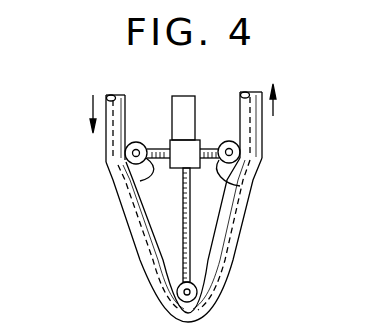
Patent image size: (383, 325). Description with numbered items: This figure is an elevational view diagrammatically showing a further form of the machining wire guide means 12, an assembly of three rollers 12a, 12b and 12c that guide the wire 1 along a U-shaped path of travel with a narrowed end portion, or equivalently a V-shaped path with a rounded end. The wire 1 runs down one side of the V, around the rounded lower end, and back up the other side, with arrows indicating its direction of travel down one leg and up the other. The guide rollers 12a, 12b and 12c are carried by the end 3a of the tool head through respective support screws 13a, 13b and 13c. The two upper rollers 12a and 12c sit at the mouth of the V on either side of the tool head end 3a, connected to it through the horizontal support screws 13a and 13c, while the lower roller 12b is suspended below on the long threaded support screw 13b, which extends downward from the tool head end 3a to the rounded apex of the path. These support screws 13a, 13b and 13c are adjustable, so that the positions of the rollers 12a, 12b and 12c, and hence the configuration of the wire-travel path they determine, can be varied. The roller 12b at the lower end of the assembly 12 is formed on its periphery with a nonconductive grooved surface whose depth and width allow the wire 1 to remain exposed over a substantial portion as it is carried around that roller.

The wire 1 is at (143, 260).
The end of the tool head 3a is at (193, 150).
The machining wire guide means 12 is at (98, 249).
The roller 12a is at (125, 154).
The roller 12b is at (198, 292).
The roller 12c is at (240, 153).
The support screw 13a is at (140, 181).
The support screw 13b is at (190, 220).
The support screw 13c is at (240, 186).